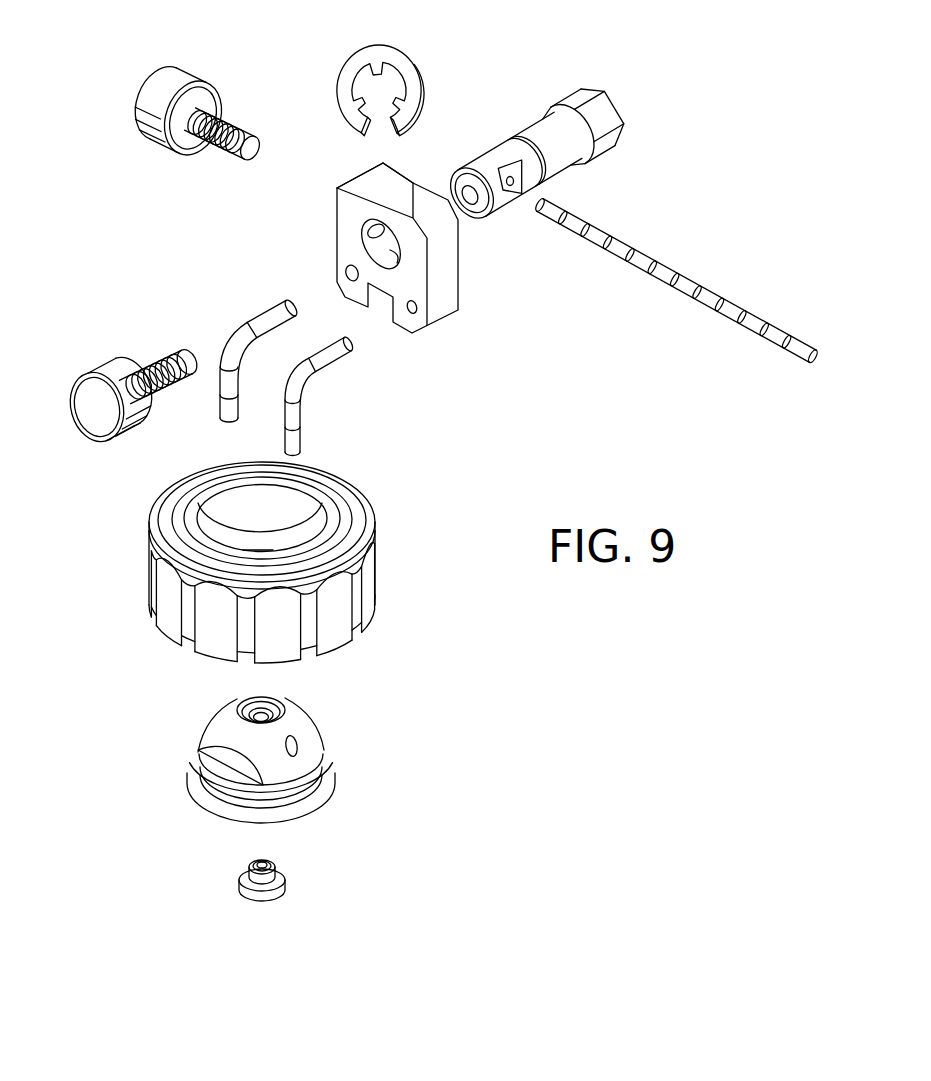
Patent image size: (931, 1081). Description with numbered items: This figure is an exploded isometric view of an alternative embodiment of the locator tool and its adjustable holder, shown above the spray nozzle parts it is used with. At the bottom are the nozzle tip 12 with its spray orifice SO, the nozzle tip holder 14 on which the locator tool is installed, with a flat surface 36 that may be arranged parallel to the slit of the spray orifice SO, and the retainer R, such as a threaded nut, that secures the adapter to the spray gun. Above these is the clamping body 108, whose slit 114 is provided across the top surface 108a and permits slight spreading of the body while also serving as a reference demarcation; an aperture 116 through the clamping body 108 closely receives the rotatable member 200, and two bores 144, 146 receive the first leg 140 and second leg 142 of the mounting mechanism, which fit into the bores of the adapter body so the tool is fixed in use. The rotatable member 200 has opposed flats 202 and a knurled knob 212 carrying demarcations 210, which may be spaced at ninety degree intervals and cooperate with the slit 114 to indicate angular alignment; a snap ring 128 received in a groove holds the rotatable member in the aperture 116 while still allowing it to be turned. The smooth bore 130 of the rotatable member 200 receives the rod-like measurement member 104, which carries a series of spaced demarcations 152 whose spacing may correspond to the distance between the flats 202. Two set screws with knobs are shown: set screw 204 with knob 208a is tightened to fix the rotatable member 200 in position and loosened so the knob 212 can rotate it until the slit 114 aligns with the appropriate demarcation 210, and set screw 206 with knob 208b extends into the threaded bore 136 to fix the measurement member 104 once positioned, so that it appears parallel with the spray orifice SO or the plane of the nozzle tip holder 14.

The set screw 204 is at (229, 79).
The knob 208a is at (168, 82).
The snap ring 128 is at (399, 60).
The rotatable member 200 is at (522, 140).
The flats 202 is at (480, 155).
The threaded bore 136 is at (463, 192).
The smooth bore 130 is at (512, 187).
The knob 212 is at (608, 125).
The demarcations 210 is at (583, 98).
The clamping body 108 is at (345, 223).
The top surface 108a is at (375, 174).
The slit 114 is at (385, 198).
The aperture 116 is at (395, 252).
The bore 144 is at (350, 275).
The bore 146 is at (413, 312).
The first leg 140 is at (277, 310).
The second leg 142 is at (340, 345).
The set screw 206 is at (160, 329).
The knob 208b is at (88, 405).
The measurement member 104 is at (670, 299).
The demarcations 152 is at (660, 257).
The retainer R is at (397, 518).
The nozzle tip holder 14 is at (358, 735).
The flat surface 36 is at (217, 752).
The nozzle tip 12 is at (285, 888).
The spray orifice SO is at (265, 863).